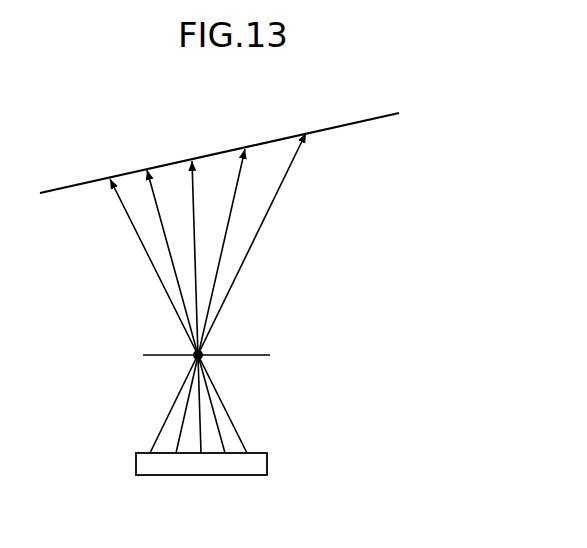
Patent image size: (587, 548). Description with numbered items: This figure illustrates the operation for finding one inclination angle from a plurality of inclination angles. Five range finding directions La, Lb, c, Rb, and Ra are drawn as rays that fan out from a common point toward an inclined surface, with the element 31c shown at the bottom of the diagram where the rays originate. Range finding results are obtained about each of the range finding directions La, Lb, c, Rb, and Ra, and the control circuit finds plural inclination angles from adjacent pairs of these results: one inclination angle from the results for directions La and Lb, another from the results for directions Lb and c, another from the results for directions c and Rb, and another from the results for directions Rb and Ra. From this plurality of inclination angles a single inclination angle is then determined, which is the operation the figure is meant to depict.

The light emitting element 31c is at (170, 476).
The range finding direction La is at (163, 297).
The range finding direction Lb is at (176, 292).
The range finding direction c is at (193, 287).
The range finding direction Rb is at (213, 284).
The range finding direction Ra is at (233, 279).